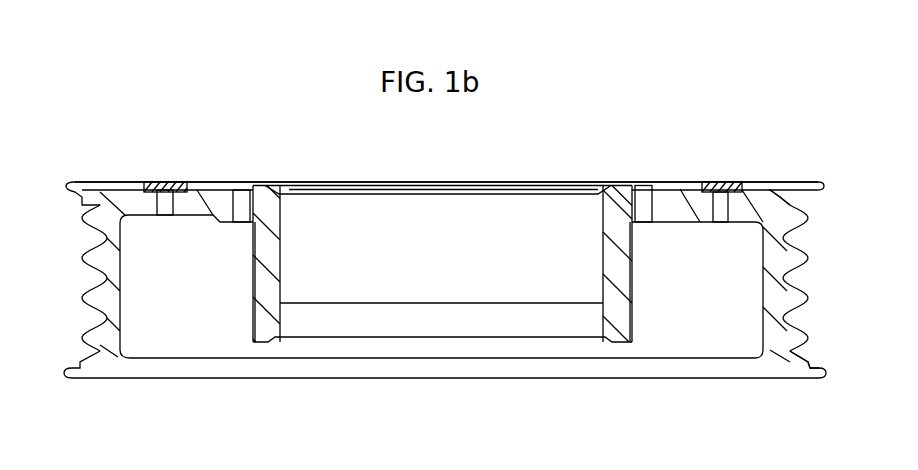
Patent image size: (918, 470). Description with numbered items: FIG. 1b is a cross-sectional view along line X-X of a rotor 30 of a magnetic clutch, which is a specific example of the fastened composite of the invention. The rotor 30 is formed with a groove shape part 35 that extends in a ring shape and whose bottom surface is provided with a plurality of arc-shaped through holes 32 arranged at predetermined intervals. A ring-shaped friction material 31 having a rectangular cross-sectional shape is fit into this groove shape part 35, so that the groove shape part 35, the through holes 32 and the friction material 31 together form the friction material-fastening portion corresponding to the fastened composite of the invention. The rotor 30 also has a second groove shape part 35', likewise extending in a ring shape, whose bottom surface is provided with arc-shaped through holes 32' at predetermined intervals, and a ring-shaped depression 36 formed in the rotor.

The rotor 30 is at (133, 174).
The friction material 31 is at (720, 189).
The arc-shaped through holes 32 is at (493, 307).
The arc-shaped through holes 32' is at (417, 305).
The groove shape part 35 is at (446, 144).
The groove shape part 35' is at (443, 147).
The ring-shaped depression 36 is at (778, 189).